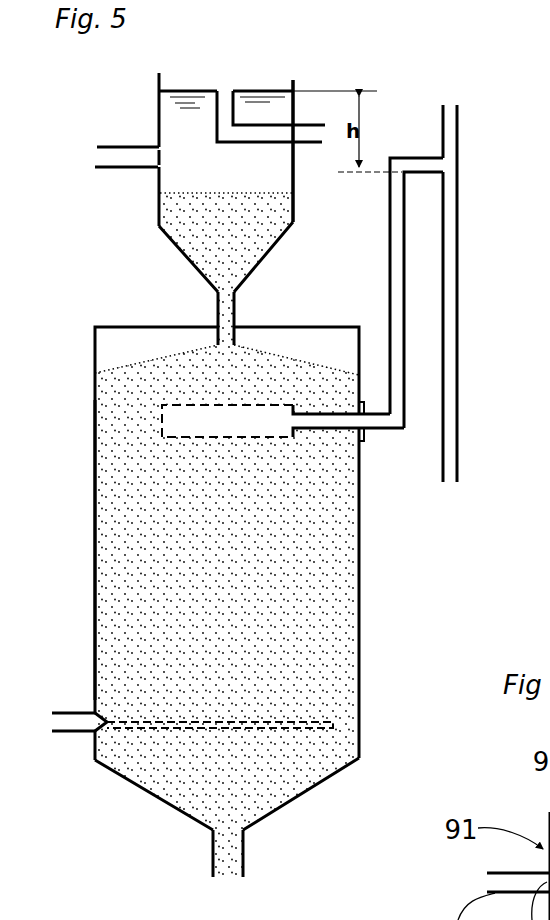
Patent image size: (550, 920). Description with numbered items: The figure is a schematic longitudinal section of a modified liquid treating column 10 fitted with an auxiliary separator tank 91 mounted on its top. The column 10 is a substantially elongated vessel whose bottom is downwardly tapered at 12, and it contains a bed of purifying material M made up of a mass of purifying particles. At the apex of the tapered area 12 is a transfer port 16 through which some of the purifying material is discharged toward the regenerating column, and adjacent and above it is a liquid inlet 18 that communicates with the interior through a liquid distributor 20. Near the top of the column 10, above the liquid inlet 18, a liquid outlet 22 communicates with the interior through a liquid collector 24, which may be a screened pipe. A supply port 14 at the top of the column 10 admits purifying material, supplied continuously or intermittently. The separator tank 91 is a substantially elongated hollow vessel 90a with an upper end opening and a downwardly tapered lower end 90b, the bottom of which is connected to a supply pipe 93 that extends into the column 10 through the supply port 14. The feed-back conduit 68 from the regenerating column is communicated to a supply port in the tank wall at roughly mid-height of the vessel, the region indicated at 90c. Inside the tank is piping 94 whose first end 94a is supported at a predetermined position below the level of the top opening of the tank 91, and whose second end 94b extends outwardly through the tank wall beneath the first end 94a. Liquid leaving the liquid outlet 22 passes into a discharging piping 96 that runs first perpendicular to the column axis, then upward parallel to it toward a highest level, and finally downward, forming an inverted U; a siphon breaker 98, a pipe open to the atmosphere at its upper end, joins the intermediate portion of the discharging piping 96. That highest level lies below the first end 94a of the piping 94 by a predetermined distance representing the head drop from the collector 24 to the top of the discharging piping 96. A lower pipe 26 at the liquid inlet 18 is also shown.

The liquid treating column 10 is at (197, 543).
The downwardly tapered bottom 12 is at (280, 807).
The supply port 14 is at (238, 325).
The transfer port 16 is at (225, 852).
The liquid inlet 18 is at (93, 729).
The liquid distributor 20 is at (300, 722).
The liquid outlet 22 is at (363, 442).
The liquid collector 24 is at (68, 550).
The gas supply pipe 26 is at (63, 733).
The feed-back conduit 68 is at (105, 168).
The elongated hollow vessel 90a is at (293, 178).
The downwardly tapered area 90b is at (270, 250).
The hopper wall portion 90c is at (158, 160).
The auxiliary separator tank 91 is at (152, 124).
The supply pipe 93 is at (228, 311).
The piping 94 is at (253, 123).
The first end of piping 94a is at (227, 93).
The second end of piping 94b is at (312, 133).
The discharging piping 96 is at (404, 322).
The siphon breaker 98 is at (450, 133).
The bed of purifying material M is at (300, 578).